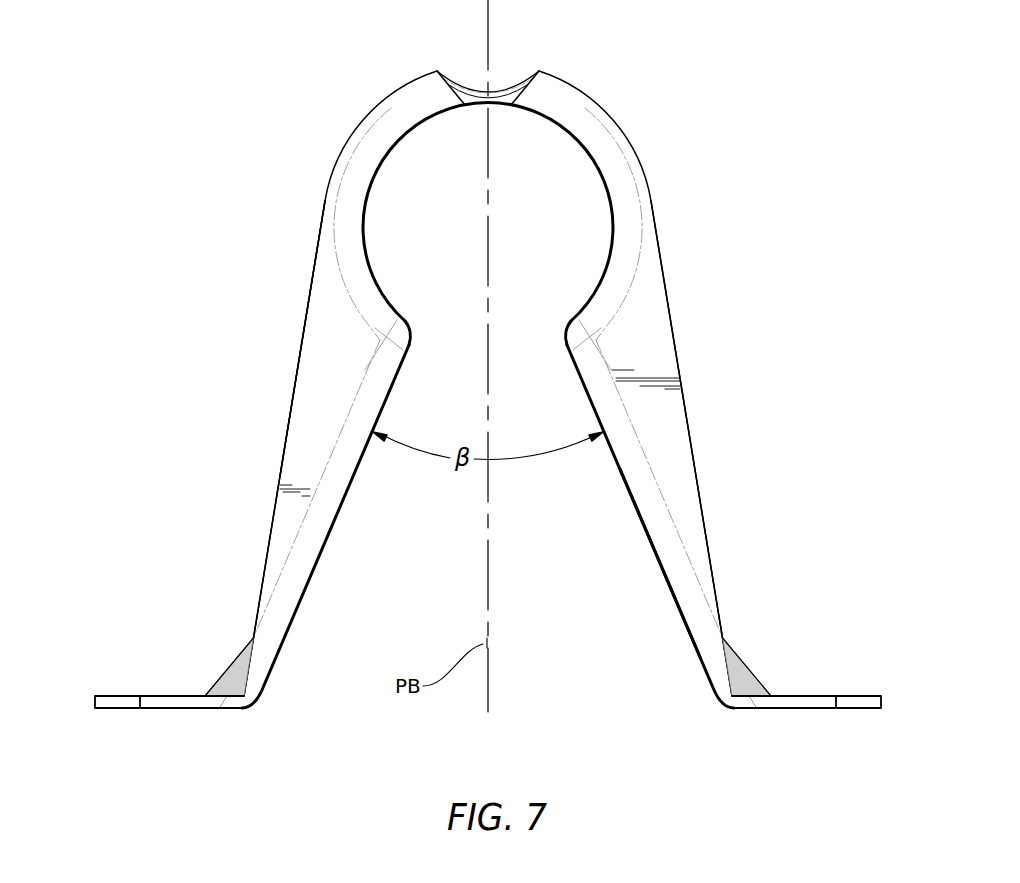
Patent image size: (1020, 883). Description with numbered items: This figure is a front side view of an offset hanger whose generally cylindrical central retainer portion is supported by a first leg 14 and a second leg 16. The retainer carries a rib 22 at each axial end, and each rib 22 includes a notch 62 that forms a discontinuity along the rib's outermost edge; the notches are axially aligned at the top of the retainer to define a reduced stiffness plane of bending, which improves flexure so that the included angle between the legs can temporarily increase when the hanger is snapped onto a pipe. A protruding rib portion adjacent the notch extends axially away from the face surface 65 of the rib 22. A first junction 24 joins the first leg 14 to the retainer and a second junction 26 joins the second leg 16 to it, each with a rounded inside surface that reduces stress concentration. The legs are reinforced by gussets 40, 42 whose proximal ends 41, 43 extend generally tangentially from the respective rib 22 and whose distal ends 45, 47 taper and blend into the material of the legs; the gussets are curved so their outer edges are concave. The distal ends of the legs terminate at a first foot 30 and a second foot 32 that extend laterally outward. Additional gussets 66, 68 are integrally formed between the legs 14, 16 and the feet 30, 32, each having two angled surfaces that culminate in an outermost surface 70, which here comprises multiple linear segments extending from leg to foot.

The first leg 14 is at (249, 550).
The second leg 16 is at (727, 546).
The rib 22 is at (434, 80).
The first junction 24 is at (397, 332).
The second junction 26 is at (580, 334).
The first foot 30 is at (133, 697).
The second foot 32 is at (843, 696).
The gusset 40 is at (313, 365).
The proximal end of gusset 41 is at (319, 320).
The gusset 42 is at (667, 348).
The proximal end of gusset 43 is at (663, 334).
The distal end of gusset 45 is at (284, 508).
The distal end of gusset 47 is at (685, 490).
The notch 62 is at (530, 75).
The face surface of rib 65 is at (573, 90).
The gusset 66 is at (241, 647).
The gusset 68 is at (738, 648).
The outermost surface of gusset 70 is at (206, 677).